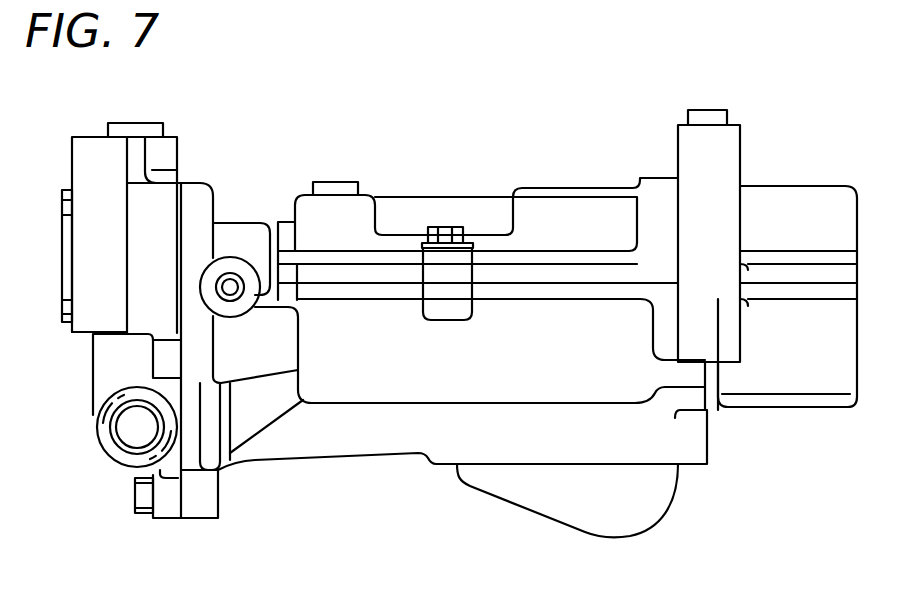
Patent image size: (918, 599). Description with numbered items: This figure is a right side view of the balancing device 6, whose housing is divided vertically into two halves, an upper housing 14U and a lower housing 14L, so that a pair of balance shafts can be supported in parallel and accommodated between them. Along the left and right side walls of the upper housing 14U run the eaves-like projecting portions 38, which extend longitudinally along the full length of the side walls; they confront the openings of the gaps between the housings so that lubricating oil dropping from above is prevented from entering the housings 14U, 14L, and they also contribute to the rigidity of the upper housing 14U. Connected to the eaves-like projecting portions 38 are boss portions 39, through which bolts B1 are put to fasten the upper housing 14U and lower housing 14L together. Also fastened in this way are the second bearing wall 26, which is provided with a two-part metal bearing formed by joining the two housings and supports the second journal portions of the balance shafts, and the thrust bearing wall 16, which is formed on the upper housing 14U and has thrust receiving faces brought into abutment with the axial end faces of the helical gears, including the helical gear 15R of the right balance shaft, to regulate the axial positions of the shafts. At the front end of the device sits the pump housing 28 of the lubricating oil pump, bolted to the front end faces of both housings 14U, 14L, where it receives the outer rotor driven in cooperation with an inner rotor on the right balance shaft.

The balancing device 6 is at (577, 125).
The upper housing 14U is at (800, 190).
The lower housing 14L is at (783, 402).
The helical gear 15R is at (337, 184).
The thrust bearing wall 16 is at (306, 208).
The second bearing wall 26 is at (655, 203).
The pump housing 28 is at (97, 378).
The eaves-like projecting portions 38 is at (373, 265).
The boss portions 39 is at (453, 322).
The bolts B1 is at (445, 226).